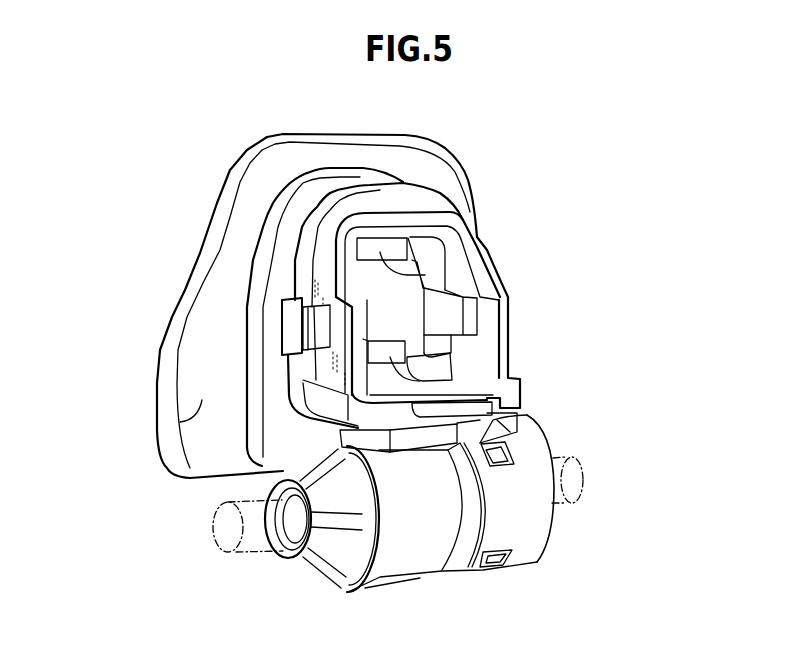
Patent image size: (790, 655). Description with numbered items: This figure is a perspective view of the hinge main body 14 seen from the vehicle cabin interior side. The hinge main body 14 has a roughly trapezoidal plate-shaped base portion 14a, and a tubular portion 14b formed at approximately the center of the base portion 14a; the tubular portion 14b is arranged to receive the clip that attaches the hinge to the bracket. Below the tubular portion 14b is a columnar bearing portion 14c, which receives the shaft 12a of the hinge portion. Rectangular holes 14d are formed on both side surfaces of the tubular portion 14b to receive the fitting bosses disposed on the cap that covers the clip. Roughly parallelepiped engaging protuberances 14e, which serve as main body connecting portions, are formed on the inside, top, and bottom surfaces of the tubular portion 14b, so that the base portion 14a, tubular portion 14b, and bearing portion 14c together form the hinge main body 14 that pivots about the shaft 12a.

The hinge main body 14 is at (473, 169).
The base portion 14a is at (180, 422).
The tubular portion 14b is at (500, 284).
The bearing portion 14c is at (403, 543).
The rectangular holes 14d is at (332, 322).
The engaging protuberances 14e is at (395, 283).
The shaft 12a is at (255, 543).